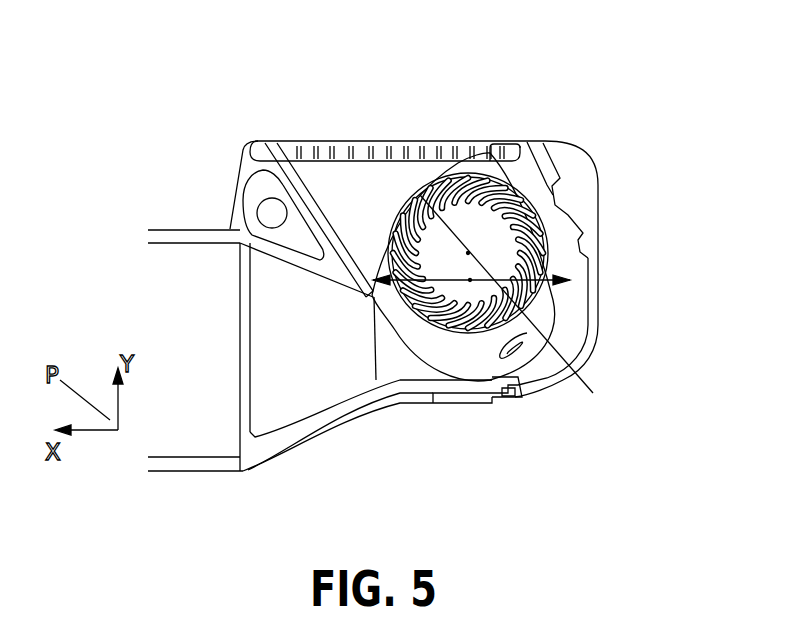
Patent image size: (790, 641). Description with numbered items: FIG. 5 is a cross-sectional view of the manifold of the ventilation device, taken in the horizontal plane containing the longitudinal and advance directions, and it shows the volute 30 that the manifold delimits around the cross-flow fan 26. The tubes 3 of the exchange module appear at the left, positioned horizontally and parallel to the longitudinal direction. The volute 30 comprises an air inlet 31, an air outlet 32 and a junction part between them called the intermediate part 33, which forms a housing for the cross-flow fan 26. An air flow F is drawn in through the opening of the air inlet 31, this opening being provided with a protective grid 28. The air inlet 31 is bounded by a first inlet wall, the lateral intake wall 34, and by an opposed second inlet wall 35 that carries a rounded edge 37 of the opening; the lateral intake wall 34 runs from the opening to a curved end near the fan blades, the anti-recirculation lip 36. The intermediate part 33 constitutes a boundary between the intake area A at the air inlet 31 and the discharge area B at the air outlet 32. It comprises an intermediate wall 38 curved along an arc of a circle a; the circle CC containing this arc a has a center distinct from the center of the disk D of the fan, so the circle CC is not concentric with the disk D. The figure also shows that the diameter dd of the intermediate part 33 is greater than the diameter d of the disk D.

The tubes 3 is at (190, 437).
The cross-flow fan 26 is at (535, 232).
The protective grid 28 is at (378, 160).
The volute 30 is at (568, 396).
The air inlet 31 is at (352, 173).
The air outlet 32 is at (315, 372).
The intermediate part 33 is at (467, 362).
The lateral intake wall 34 is at (293, 192).
The second inlet wall 35 is at (540, 172).
The anti-recirculation lip 36 is at (393, 305).
The rounded edge 37 is at (508, 140).
The intermediate wall 38 is at (520, 388).
The arc of a circle a is at (495, 378).
The intake area A is at (325, 192).
The discharge area B is at (267, 392).
The circle CC is at (424, 372).
The diameter of the disk d is at (458, 163).
The diameter of the intermediate part dd is at (548, 272).
The disk D is at (520, 306).
The air flow F is at (439, 122).